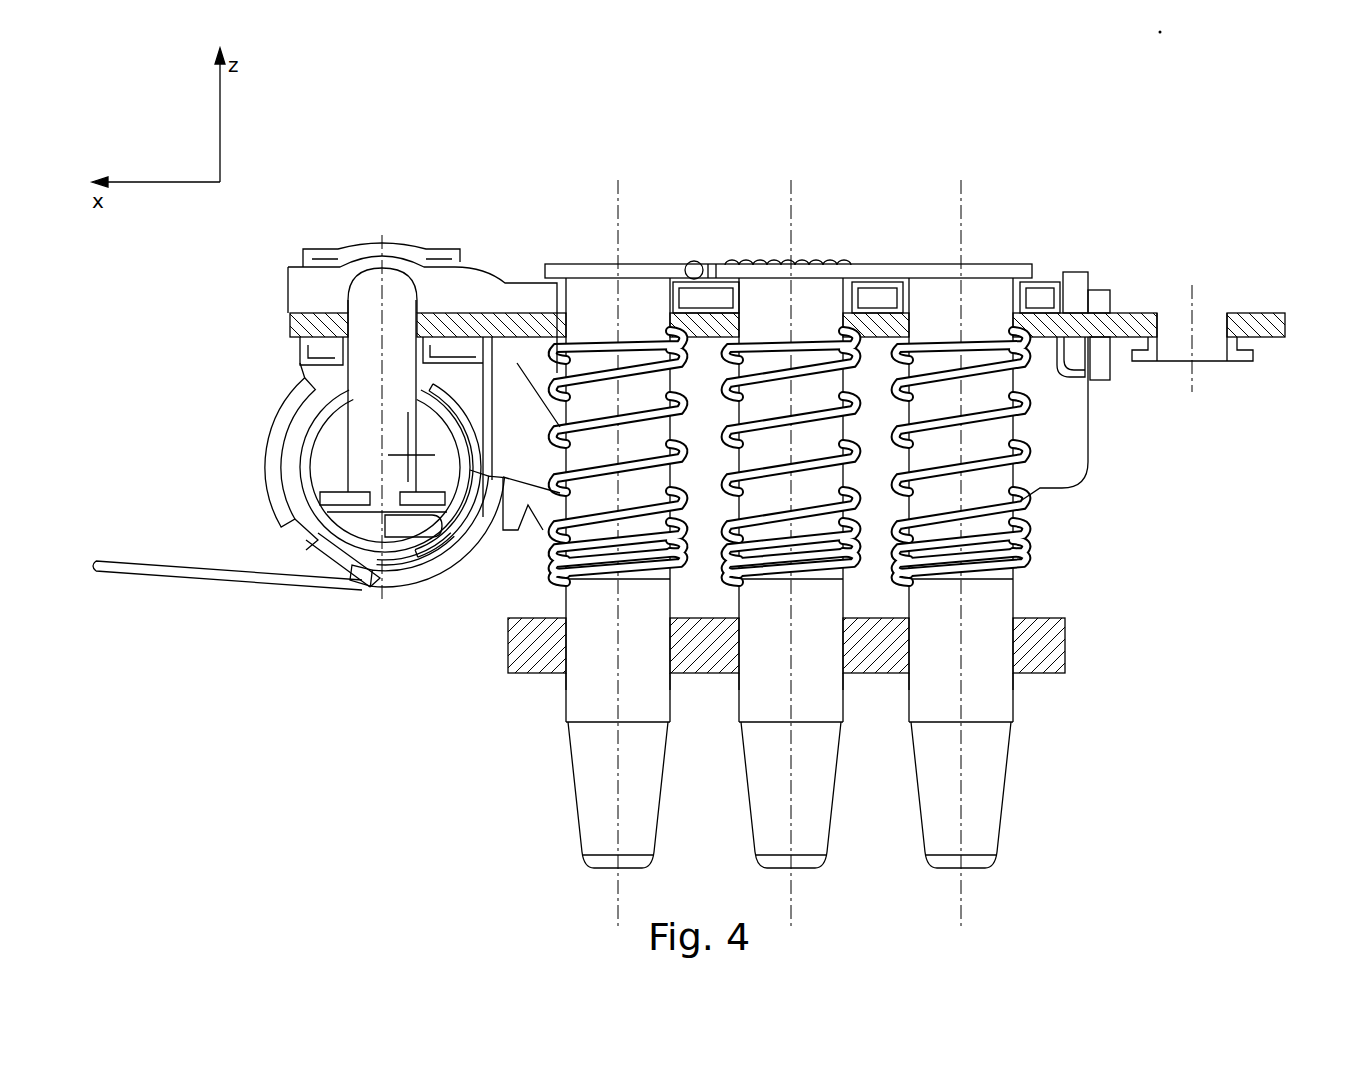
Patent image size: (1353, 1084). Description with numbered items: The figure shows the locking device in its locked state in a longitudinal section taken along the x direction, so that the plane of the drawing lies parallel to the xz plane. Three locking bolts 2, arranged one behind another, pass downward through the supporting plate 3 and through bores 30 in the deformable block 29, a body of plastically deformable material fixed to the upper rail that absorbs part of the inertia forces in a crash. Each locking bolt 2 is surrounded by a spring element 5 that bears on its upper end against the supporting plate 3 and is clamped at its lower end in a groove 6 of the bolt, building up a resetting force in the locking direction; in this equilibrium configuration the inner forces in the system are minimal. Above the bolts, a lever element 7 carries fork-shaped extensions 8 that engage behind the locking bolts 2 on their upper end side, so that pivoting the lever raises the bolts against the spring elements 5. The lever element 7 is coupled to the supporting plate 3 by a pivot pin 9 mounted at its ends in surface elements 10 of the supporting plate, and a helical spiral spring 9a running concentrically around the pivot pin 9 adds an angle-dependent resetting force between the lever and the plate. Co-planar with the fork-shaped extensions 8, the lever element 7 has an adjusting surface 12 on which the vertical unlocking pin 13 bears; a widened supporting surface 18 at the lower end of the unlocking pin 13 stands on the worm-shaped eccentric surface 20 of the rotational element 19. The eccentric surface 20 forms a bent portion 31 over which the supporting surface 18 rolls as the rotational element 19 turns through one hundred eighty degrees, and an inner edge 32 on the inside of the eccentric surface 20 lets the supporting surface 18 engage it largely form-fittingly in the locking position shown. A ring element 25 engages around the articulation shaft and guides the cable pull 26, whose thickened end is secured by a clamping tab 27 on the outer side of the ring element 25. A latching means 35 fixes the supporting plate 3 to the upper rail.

The locking bolt 2 is at (640, 300).
The supporting plate 3 is at (1262, 318).
The spring element 5 is at (682, 560).
The groove 6 is at (605, 582).
The lever element 7 is at (520, 298).
The fork-shaped extension 8 is at (712, 300).
The pivot pin 9 is at (1105, 300).
The helical spiral spring 9a is at (692, 262).
The surface element 10 is at (1076, 288).
The adjusting surface 12 is at (318, 300).
The unlocking pin 13 is at (365, 378).
The supporting surface 18 is at (338, 490).
The rotational element 19 is at (372, 545).
The eccentric surface 20 is at (452, 405).
The ring element 25 is at (315, 560).
The cable pull 26 is at (118, 572).
The clamping tab 27 is at (448, 256).
The deformable block 29 is at (1042, 640).
The bore 30 is at (563, 680).
The bent portion 31 is at (388, 548).
The inner edge 32 is at (458, 512).
The latching means 35 is at (1250, 352).